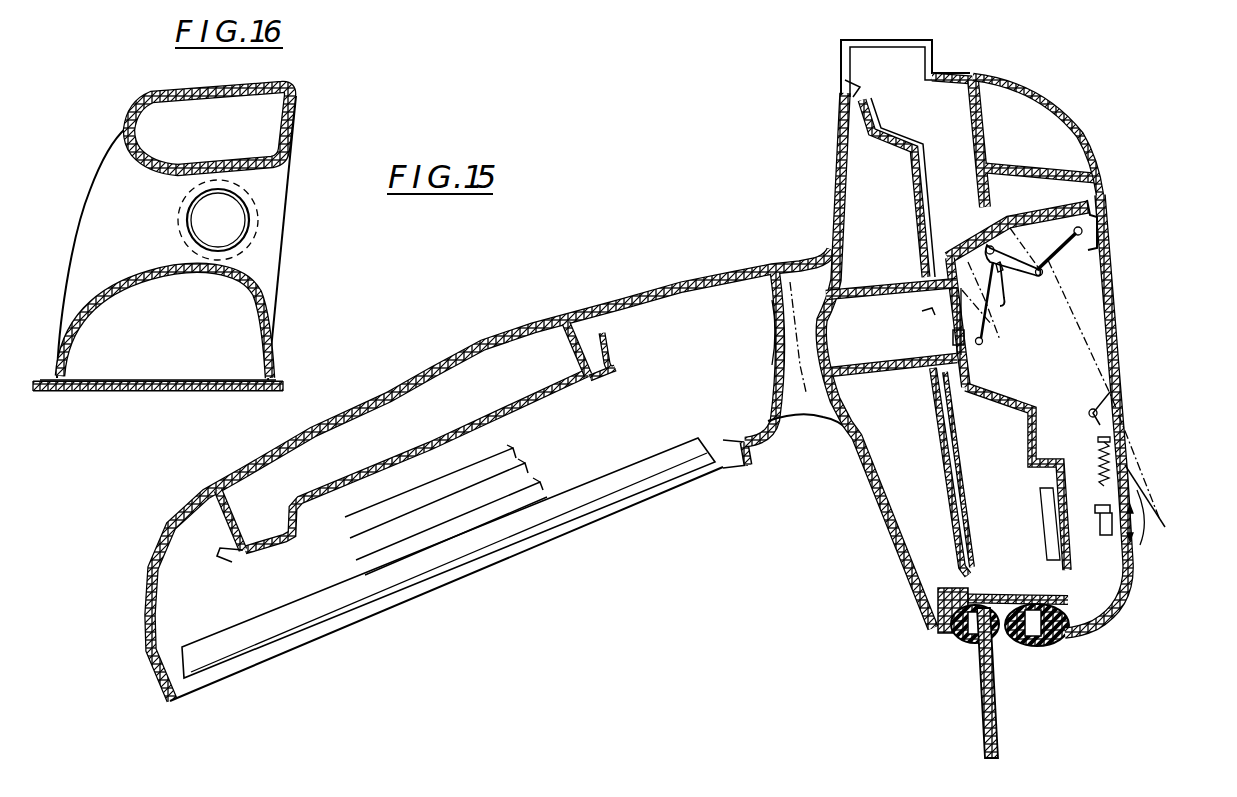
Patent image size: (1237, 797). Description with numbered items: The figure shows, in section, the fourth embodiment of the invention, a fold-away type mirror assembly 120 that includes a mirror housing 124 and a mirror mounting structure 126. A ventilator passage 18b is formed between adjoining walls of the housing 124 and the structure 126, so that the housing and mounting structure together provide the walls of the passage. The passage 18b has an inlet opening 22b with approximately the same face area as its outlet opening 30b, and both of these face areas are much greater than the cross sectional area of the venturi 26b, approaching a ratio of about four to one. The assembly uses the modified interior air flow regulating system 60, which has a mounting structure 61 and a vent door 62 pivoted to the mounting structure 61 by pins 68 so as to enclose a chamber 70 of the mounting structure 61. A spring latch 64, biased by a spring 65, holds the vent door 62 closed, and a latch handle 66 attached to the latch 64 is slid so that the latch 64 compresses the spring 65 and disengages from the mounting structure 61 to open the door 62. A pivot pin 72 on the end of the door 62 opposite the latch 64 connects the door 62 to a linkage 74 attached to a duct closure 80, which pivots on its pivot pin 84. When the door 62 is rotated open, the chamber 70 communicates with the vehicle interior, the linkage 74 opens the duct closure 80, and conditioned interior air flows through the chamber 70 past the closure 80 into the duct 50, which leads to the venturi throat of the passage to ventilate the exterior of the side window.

In FIG. 15, the fold-away type mirror assembly 120 is at (459, 341).
In FIG. 15, the mirror housing 124 is at (218, 490).
In FIG. 15, the mirror mounting structure 126 is at (833, 173).
In FIG. 16, the inlet opening 22b is at (96, 172).
In FIG. 15, the inlet opening 22b is at (805, 262).
In FIG. 16, the ventilator passage 18b is at (133, 192).
In FIG. 15, the ventilator passage 18b is at (784, 284).
In FIG. 16, the venturi 26b is at (181, 245).
In FIG. 15, the venturi 26b is at (800, 342).
In FIG. 16, the duct 50 is at (240, 212).
In FIG. 15, the duct 50 is at (893, 348).
In FIG. 16, the outlet opening 30b is at (283, 230).
In FIG. 15, the outlet opening 30b is at (818, 420).
In FIG. 15, the interior air flow regulating system 60 is at (1122, 295).
In FIG. 15, the mounting structure 61 is at (1097, 217).
In FIG. 15, the vent door 62 is at (1117, 345).
In FIG. 15, the spring latch 64 is at (1097, 520).
In FIG. 15, the spring 65 is at (1097, 460).
In FIG. 15, the latch handle 66 is at (1143, 527).
In FIG. 15, the pins 68 is at (1089, 410).
In FIG. 15, the chamber 70 is at (1053, 368).
In FIG. 15, the pivot pin 72 is at (1079, 242).
In FIG. 15, the linkage 74 is at (1020, 272).
In FIG. 15, the duct closure 80 is at (955, 337).
In FIG. 15, the pivot pin 84 is at (980, 345).